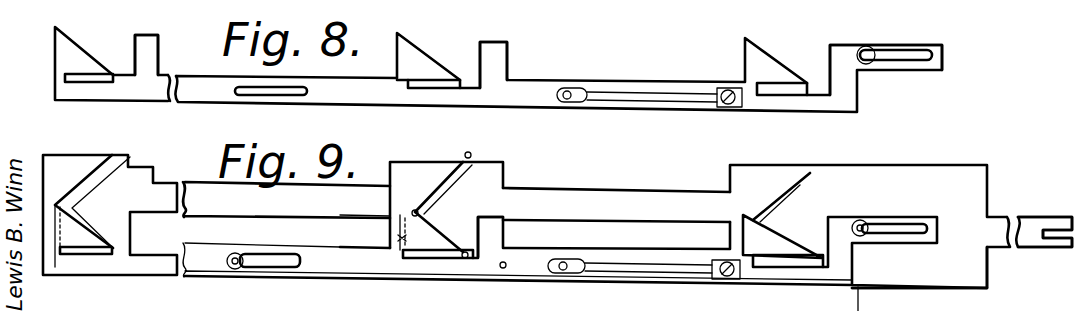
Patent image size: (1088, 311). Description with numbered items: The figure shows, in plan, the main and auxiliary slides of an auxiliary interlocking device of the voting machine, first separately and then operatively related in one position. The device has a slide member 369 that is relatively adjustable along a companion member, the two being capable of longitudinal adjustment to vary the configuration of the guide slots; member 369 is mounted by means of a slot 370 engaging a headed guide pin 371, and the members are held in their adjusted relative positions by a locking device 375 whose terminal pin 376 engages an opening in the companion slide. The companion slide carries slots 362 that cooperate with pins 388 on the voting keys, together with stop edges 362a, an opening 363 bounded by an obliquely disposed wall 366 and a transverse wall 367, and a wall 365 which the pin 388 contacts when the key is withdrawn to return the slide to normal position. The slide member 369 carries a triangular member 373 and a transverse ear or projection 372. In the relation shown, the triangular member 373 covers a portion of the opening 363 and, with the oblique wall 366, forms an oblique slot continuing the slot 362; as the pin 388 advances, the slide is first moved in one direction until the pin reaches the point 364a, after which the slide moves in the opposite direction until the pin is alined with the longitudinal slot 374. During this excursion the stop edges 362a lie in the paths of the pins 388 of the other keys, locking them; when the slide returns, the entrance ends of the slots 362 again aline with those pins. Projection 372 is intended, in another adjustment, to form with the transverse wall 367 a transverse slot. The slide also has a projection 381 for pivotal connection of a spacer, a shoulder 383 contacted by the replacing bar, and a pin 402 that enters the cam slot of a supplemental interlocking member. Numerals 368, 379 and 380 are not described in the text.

In FIG. 9, the slot 362 is at (107, 155).
In FIG. 9, the stop edge 362a is at (431, 173).
In FIG. 9, the opening 363 is at (88, 237).
In FIG. 9, the point 364a is at (420, 212).
In FIG. 9, the wall of the slot 365 is at (72, 192).
In FIG. 9, the obliquely disposed wall 366 is at (458, 243).
In FIG. 9, the transverse wall 367 is at (400, 238).
In FIG. 9, the guide bar 368 is at (456, 202).
In FIG. 8, the slide member 369 is at (367, 88).
In FIG. 9, the slide member 369 is at (418, 307).
In FIG. 8, the slot 370 is at (255, 88).
In FIG. 9, the slot 370 is at (272, 260).
In FIG. 8, the headed guide pin 371 is at (872, 46).
In FIG. 9, the headed guide pin 371 is at (237, 258).
In FIG. 8, the transverse ear or projection 372 is at (155, 47).
In FIG. 9, the transverse ear or projection 372 is at (142, 212).
In FIG. 8, the triangular member 373 is at (68, 57).
In FIG. 9, the triangular member 373 is at (400, 235).
In FIG. 8, the longitudinal slot 374 is at (66, 78).
In FIG. 9, the longitudinal slot 374 is at (63, 270).
In FIG. 8, the locking device 375 is at (634, 96).
In FIG. 9, the locking device 375 is at (648, 263).
In FIG. 8, the terminal pin 376 is at (568, 91).
In FIG. 9, the terminal pin 376 is at (566, 262).
In FIG. 8, the screw 379 is at (727, 90).
In FIG. 9, the screw 379 is at (726, 269).
In FIG. 9, the gap 380 is at (201, 229).
In FIG. 9, the projection 381 is at (1023, 217).
In FIG. 9, the shoulder 383 is at (948, 270).
In FIG. 9, the pin 388 is at (491, 140).
In FIG. 9, the pin 402 is at (863, 303).